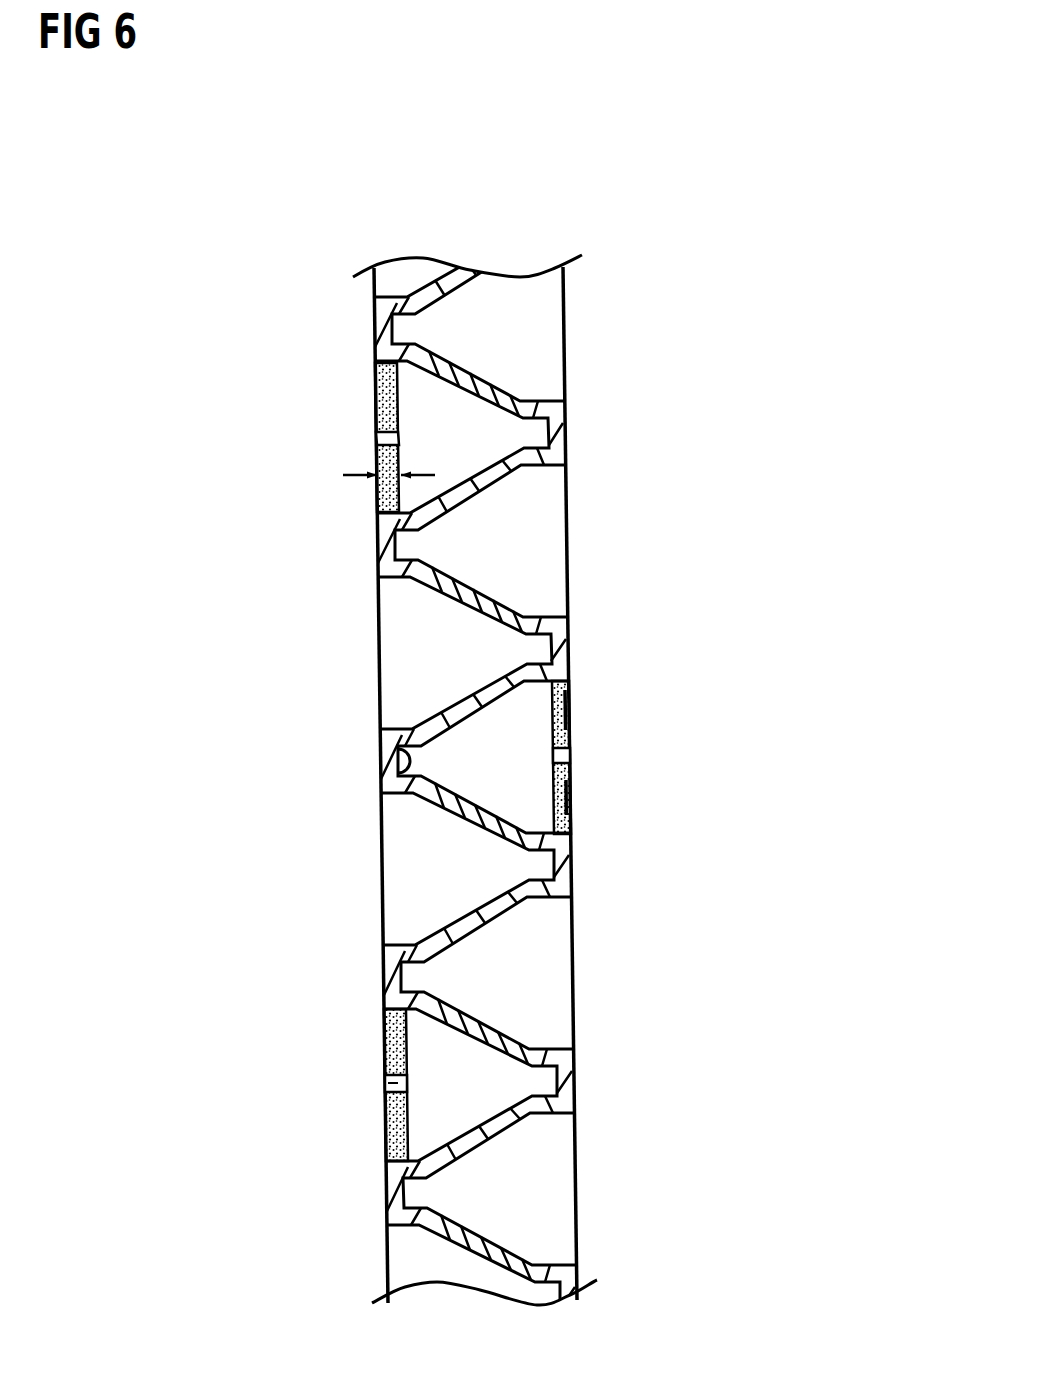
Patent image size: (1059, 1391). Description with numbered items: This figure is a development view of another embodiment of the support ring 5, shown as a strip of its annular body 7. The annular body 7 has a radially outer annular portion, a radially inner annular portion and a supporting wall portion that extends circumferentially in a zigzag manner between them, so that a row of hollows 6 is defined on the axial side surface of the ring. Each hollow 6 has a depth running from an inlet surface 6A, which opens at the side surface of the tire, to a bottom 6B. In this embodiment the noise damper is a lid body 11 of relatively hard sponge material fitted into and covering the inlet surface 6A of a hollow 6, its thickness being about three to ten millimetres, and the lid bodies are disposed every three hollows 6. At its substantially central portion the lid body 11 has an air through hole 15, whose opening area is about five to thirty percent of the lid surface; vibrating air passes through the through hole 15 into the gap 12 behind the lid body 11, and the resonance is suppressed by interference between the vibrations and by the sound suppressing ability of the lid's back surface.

The support ring 5 is at (469, 789).
The hollow 6 is at (465, 752).
The inlet surface 6A is at (573, 798).
The bottom 6B is at (399, 792).
The annular body 7 is at (572, 548).
The lid body 11 is at (570, 710).
The gap 12 is at (490, 733).
The air through hole 15 is at (568, 755).